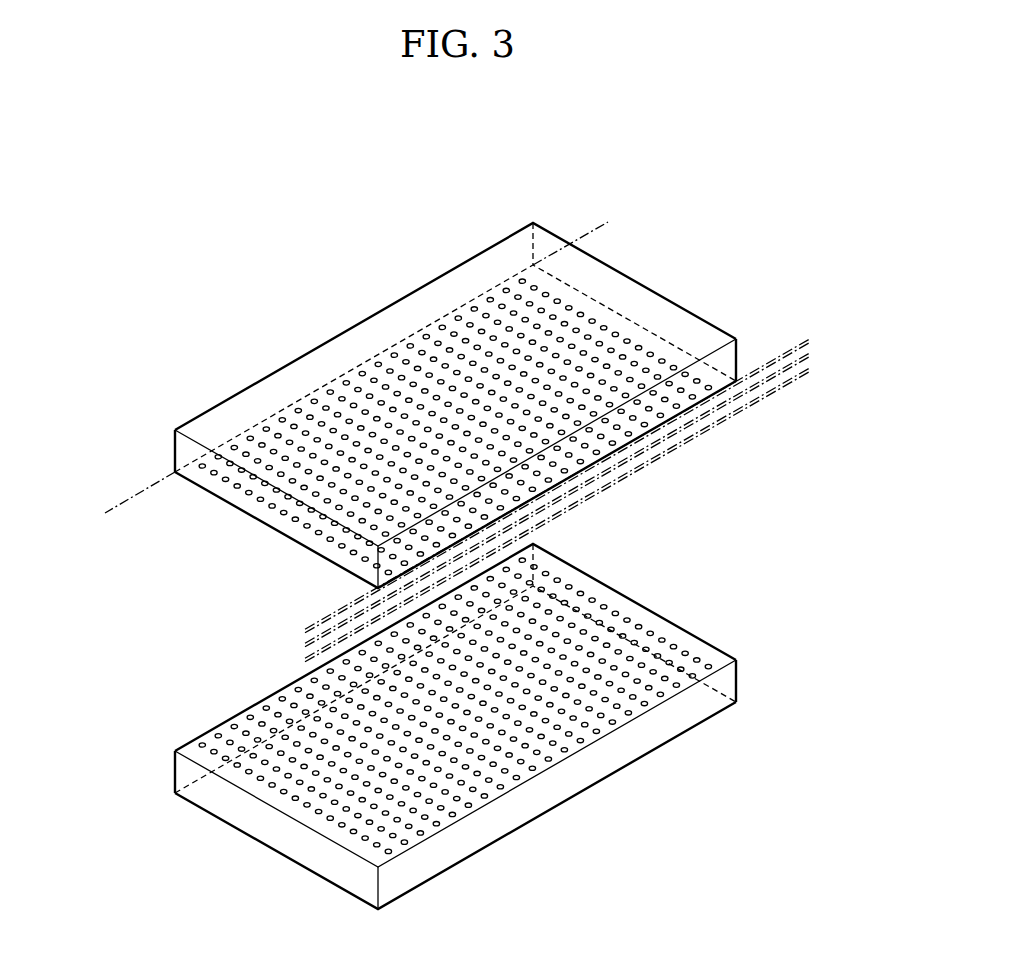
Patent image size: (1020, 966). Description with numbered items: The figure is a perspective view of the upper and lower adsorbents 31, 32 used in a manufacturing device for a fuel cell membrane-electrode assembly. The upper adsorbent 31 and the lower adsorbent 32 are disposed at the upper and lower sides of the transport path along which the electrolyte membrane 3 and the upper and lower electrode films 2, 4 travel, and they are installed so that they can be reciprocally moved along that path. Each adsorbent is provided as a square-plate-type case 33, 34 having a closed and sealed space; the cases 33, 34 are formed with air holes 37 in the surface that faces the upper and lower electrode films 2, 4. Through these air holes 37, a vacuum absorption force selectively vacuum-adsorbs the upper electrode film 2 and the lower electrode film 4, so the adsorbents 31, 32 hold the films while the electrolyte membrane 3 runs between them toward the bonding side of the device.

The upper electrode film 2 is at (563, 469).
The electrolyte membrane 3 is at (794, 372).
The lower electrode film 4 is at (767, 396).
The upper adsorbent 31 is at (420, 398).
The lower adsorbent 32 is at (442, 729).
The square-plate-type case 33 is at (357, 326).
The square-plate-type case 34 is at (217, 726).
The air holes 37 is at (317, 489).